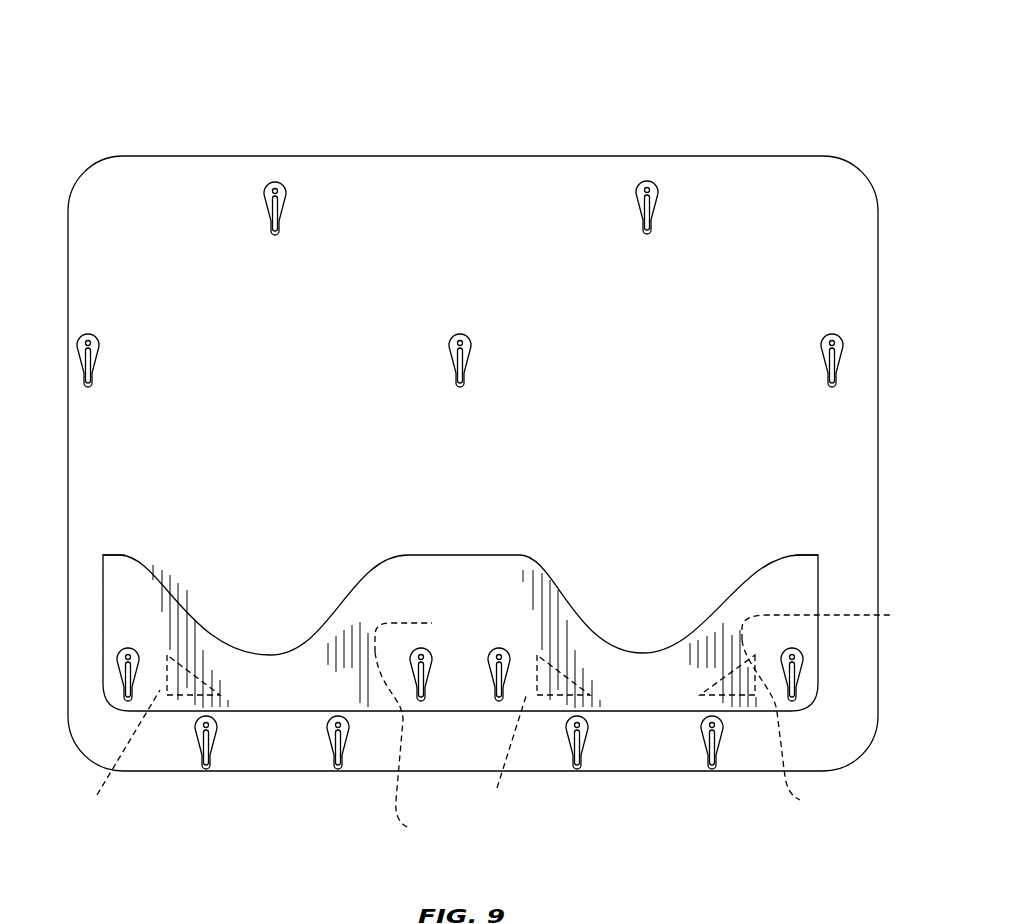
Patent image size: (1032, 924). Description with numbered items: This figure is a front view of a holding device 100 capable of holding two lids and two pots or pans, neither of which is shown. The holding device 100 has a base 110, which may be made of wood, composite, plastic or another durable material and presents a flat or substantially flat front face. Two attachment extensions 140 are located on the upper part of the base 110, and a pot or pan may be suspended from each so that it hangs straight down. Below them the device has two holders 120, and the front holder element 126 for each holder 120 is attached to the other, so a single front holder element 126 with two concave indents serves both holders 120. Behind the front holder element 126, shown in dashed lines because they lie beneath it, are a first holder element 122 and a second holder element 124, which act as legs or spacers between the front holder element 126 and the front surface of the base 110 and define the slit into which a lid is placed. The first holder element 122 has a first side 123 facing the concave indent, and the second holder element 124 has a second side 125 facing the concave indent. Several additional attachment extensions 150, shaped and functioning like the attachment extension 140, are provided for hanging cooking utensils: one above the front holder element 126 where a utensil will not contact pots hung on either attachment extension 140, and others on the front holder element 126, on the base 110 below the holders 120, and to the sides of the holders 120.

The holding device 100 is at (748, 54).
The base 110 is at (203, 182).
The holder 120 is at (472, 572).
The first holder element 122 is at (97, 795).
The first side 123 is at (158, 692).
The second holder element 124 is at (405, 830).
The second side 125 is at (652, 630).
The front holder element 126 is at (118, 572).
The attachment extension 140 is at (287, 194).
The additional attachment extension 150 is at (90, 333).